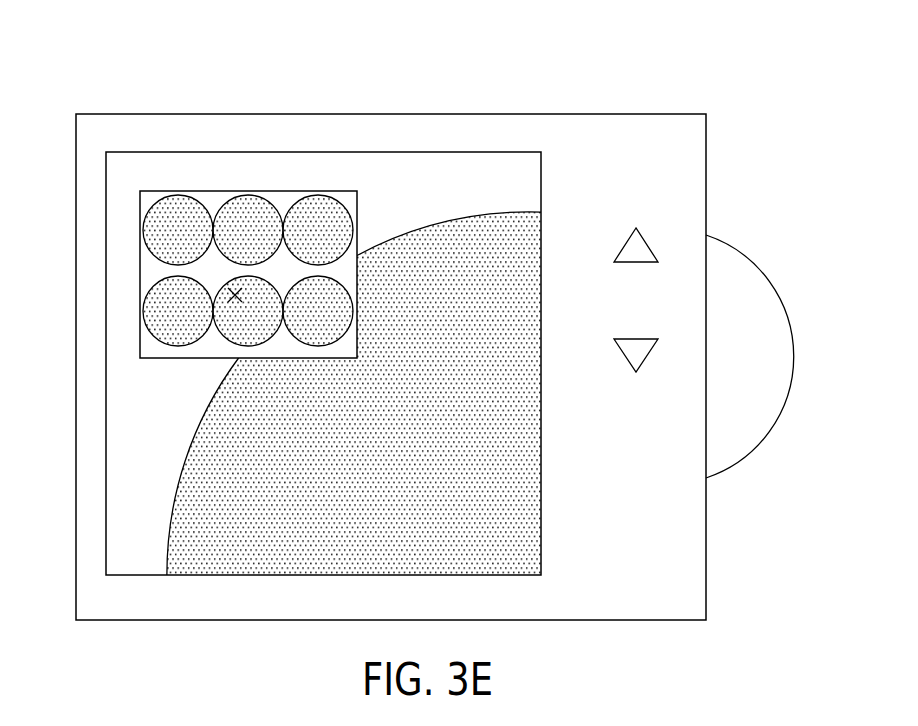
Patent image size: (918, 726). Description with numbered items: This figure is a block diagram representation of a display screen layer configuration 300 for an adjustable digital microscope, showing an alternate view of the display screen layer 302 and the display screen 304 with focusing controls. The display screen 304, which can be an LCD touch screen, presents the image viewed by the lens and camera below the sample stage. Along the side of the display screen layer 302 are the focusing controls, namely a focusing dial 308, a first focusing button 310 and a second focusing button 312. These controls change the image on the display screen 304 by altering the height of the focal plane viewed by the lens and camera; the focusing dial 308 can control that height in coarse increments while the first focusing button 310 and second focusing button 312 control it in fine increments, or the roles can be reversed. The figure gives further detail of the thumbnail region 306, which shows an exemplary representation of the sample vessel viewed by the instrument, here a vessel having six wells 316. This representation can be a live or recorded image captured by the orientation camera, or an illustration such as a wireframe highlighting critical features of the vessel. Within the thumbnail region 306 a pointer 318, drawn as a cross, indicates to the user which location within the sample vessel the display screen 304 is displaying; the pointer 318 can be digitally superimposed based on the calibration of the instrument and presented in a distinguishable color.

The display screen layer configuration 300 is at (681, 78).
The display screen layer 302 is at (279, 114).
The display screen 304 is at (464, 192).
The thumbnail region 306 is at (186, 249).
The focusing dial 308 is at (792, 372).
The first focusing button 310 is at (650, 247).
The second focusing button 312 is at (650, 353).
The wells 316 is at (142, 232).
The pointer 318 is at (234, 298).